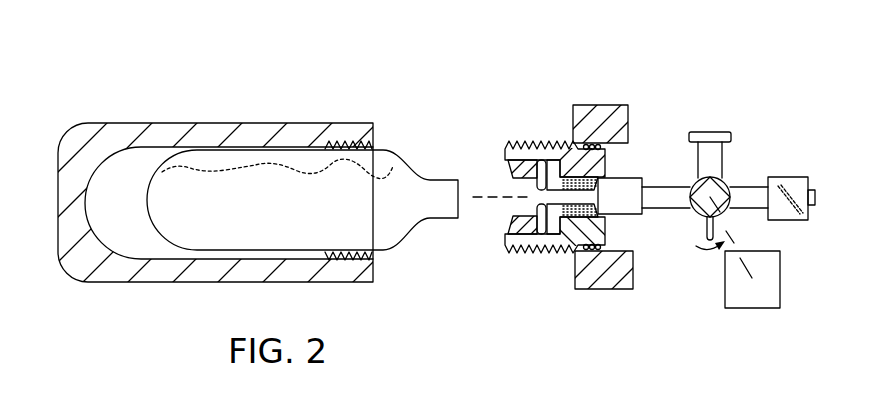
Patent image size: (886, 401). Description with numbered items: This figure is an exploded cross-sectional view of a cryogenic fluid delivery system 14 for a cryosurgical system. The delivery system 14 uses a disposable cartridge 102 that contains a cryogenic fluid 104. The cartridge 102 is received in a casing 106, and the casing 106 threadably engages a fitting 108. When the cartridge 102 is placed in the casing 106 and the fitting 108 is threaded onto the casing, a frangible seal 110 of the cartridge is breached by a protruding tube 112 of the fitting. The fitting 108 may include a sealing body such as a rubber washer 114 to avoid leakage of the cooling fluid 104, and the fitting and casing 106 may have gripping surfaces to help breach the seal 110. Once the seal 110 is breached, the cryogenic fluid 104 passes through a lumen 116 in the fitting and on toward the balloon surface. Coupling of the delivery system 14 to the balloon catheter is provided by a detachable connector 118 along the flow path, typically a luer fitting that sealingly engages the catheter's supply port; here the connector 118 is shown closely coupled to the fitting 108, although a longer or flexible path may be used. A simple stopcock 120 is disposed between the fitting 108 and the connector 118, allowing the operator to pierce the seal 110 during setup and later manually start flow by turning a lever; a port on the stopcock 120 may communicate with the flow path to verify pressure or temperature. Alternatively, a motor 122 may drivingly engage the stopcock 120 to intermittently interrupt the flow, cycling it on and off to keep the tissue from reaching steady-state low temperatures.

The cryogenic fluid delivery system 14 is at (244, 52).
The disposable cartridge 102 is at (395, 240).
The cryogenic fluid 104 is at (393, 172).
The casing 106 is at (153, 123).
The fitting 108 is at (555, 115).
The frangible seal 110 is at (460, 190).
The protruding tube 112 is at (530, 204).
The rubber washer 114 is at (559, 240).
The lumen 116 is at (516, 186).
The detachable connector 118 is at (803, 177).
The stopcock 120 is at (726, 180).
The motor 122 is at (728, 293).